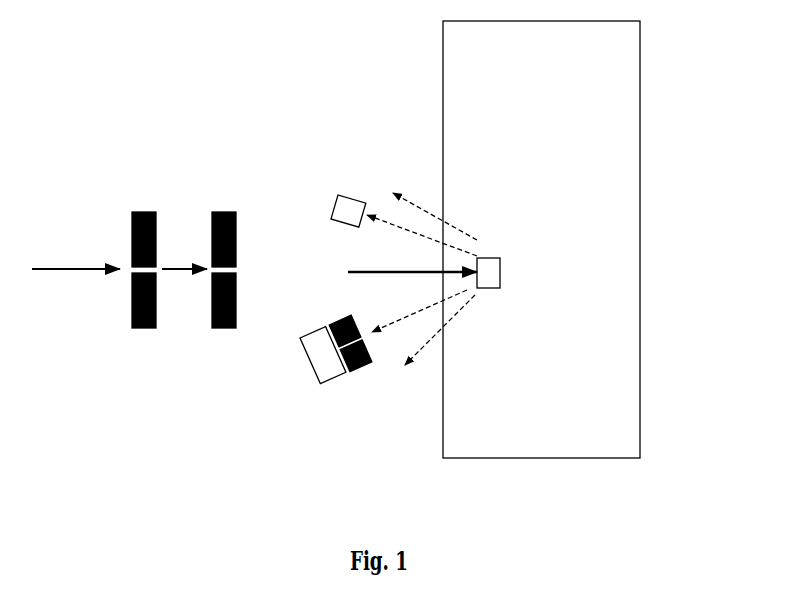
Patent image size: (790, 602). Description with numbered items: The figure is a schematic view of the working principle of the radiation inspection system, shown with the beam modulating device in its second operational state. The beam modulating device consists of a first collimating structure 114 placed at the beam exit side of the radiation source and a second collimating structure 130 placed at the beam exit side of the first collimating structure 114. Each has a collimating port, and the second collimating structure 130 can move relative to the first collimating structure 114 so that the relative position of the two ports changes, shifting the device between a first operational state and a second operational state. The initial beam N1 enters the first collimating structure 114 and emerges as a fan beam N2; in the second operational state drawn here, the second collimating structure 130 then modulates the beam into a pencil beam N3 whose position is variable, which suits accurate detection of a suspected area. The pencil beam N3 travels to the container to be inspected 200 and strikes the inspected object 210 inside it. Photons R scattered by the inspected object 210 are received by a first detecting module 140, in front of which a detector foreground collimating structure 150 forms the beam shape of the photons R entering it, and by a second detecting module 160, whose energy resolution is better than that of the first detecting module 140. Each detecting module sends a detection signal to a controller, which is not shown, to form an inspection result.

The first collimating structure 114 is at (145, 330).
The second collimating structure 130 is at (223, 330).
The first detecting module 140 is at (320, 383).
The detector foreground collimating structure 150 is at (363, 365).
The second detecting module 160 is at (338, 198).
The container to be inspected 200 is at (640, 128).
The inspected object 210 is at (500, 282).
The initial beam N1 is at (76, 289).
The fan beam N2 is at (184, 289).
The pencil beam N3 is at (412, 288).
The photons R is at (422, 279).